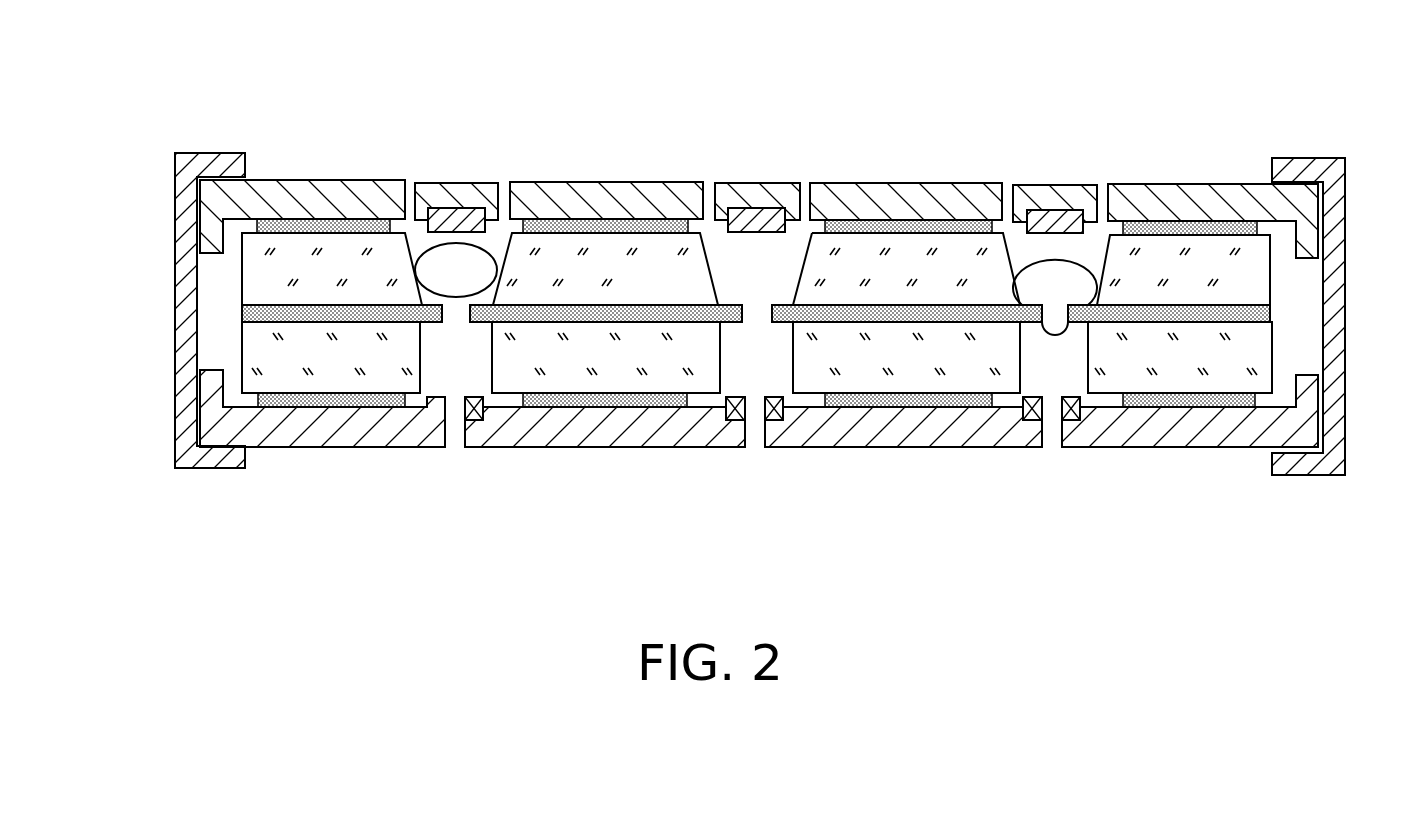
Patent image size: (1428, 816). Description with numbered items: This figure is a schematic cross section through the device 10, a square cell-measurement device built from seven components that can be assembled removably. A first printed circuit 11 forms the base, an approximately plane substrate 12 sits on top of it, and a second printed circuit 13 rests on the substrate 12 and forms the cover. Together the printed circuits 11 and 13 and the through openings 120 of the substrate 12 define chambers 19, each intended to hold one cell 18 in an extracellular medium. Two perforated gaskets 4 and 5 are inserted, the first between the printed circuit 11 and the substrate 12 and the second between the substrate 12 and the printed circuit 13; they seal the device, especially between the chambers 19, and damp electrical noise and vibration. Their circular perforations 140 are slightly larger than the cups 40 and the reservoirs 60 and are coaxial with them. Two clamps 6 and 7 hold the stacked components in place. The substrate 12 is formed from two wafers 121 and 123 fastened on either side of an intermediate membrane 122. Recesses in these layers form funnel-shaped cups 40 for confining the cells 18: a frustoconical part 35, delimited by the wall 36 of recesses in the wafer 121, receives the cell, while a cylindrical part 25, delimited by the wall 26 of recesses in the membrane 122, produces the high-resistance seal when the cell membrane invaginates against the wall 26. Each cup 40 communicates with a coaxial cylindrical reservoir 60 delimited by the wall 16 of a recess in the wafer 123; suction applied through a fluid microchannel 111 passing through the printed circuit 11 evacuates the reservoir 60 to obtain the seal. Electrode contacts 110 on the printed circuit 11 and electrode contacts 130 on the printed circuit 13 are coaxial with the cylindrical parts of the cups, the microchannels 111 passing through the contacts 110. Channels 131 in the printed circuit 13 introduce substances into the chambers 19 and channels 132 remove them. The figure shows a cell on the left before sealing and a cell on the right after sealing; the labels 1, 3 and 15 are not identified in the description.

The first lower holding plate 1 is at (337, 393).
The first upper holding plate 3 is at (312, 217).
The perforated gasket 4 is at (637, 407).
The perforated gasket 5 is at (597, 230).
The clamp 6 is at (187, 183).
The clamp 7 is at (1333, 329).
The device 10 is at (1266, 106).
The first printed circuit 11 is at (1177, 437).
The substrate 12 is at (237, 313).
The second printed circuit 13 is at (1205, 202).
The lower lens side surface 15 is at (778, 352).
The wall of cylindrical through recesses 16 is at (703, 447).
The cell 18 is at (450, 258).
The chamber 19 is at (752, 282).
The cylindrical part 25 is at (757, 320).
The wall of cylindrical through recesses 26 is at (752, 318).
The frustoconical part 35 is at (767, 255).
The wall of frustoconical through recesses 36 is at (727, 212).
The cup 40 is at (899, 207).
The cylindrical reservoir 60 is at (772, 387).
The electrode contact 110 is at (437, 420).
The fluid microchannel 111 is at (757, 435).
The through opening 120 is at (899, 221).
The wafer 121 is at (260, 263).
The intermediate membrane 122 is at (258, 313).
The wafer 123 is at (260, 363).
The electrode contact 130 is at (1055, 210).
The channel 131 is at (1003, 195).
The channel 132 is at (1100, 195).
The circular perforation 140 is at (1012, 408).